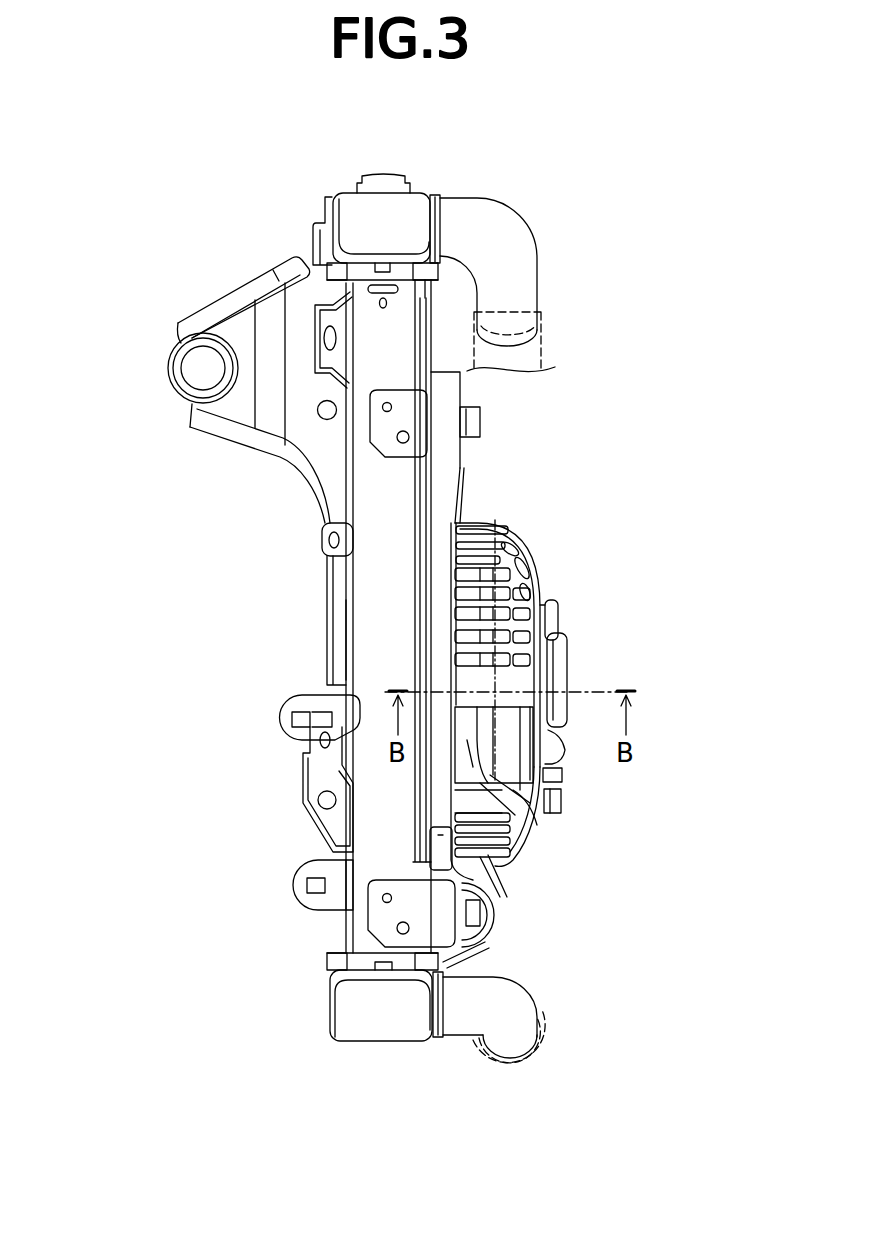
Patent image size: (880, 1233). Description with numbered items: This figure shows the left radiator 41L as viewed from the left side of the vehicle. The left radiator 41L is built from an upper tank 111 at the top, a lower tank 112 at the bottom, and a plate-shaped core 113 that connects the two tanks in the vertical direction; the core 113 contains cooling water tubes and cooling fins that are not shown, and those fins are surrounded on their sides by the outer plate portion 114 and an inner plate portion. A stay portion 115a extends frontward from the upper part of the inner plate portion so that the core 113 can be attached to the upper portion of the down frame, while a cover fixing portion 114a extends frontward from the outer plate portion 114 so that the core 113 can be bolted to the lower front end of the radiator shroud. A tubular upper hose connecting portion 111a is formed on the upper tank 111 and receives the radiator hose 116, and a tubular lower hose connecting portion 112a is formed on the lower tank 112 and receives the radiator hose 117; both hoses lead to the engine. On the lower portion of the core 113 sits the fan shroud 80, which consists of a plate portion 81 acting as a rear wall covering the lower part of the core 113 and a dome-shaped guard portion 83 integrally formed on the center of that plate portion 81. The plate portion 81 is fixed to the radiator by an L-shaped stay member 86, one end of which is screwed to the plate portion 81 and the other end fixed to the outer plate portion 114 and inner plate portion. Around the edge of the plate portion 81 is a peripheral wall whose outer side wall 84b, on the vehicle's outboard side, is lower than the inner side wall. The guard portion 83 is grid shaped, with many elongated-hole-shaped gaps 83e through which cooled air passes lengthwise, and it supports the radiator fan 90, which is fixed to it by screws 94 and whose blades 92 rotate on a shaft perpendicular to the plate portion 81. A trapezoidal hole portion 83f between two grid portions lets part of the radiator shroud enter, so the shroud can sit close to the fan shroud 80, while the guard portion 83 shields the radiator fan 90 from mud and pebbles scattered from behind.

The upper tank 111 is at (410, 213).
The upper hose connecting portion 111a is at (513, 283).
The stay portion 115a is at (260, 325).
The radiator hose 116 is at (535, 349).
The left radiator 41L is at (238, 493).
The stay member 86 is at (410, 420).
The outer side wall 84b is at (440, 470).
The plate portion 81 is at (458, 507).
The fan shroud 80 is at (560, 522).
The gaps 83e is at (523, 620).
The guard portion 83 is at (553, 637).
The outer plate portion 114 is at (360, 598).
The core 113 is at (335, 646).
The radiator fan 90 is at (512, 733).
The cover fixing portion 114a is at (297, 745).
The hole portion 83f is at (537, 764).
The screws 94 is at (558, 805).
The blades 92 is at (537, 825).
The lower hose connecting portion 112a is at (512, 1002).
The lower tank 112 is at (413, 1030).
The radiator hose 117 is at (540, 1058).